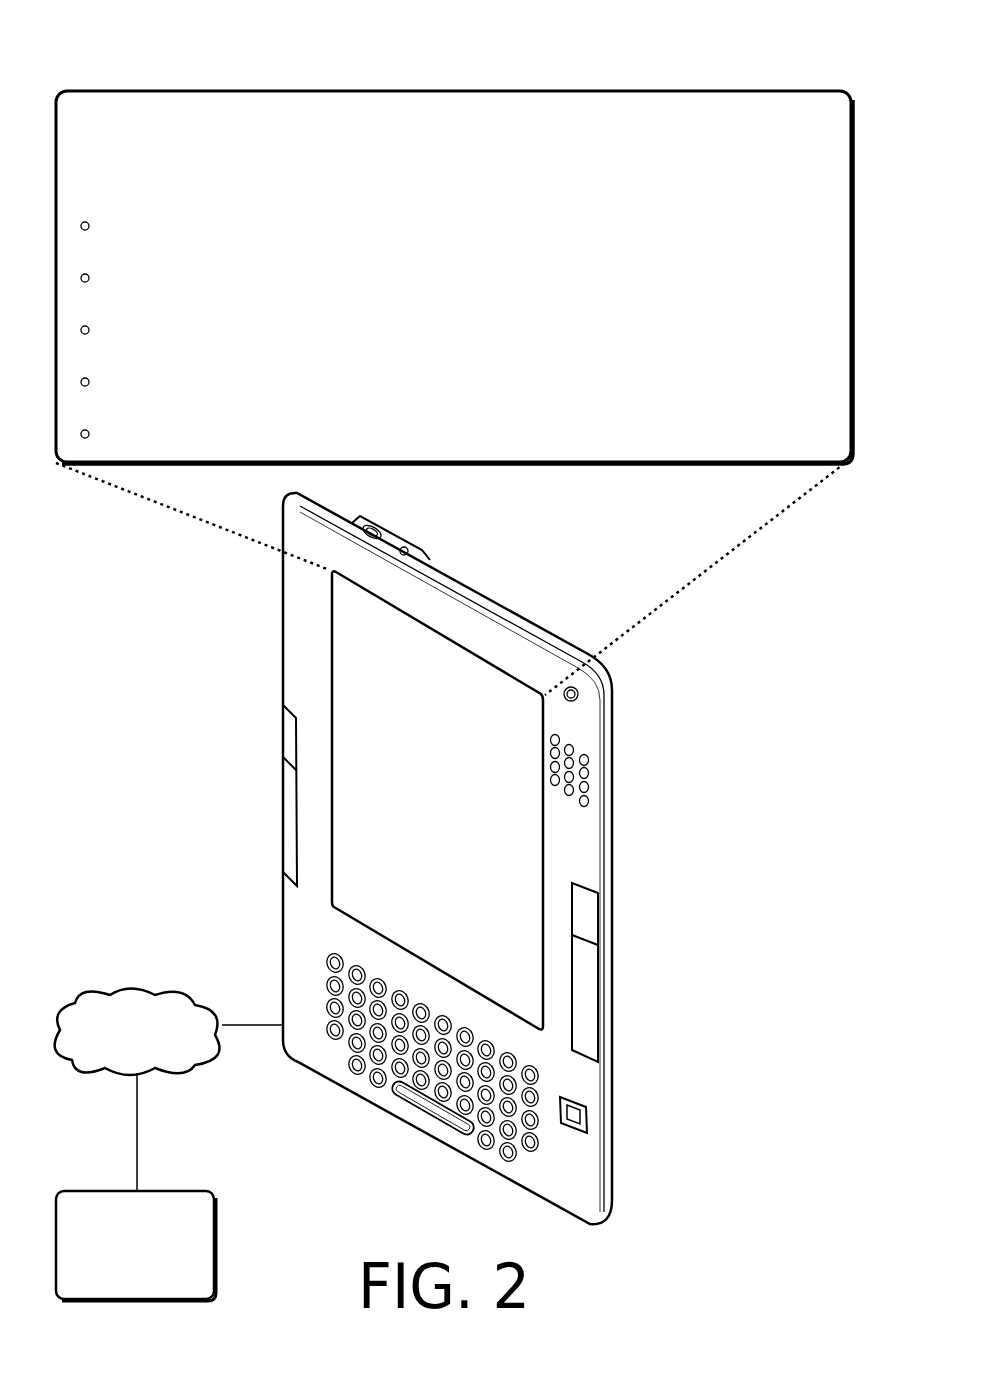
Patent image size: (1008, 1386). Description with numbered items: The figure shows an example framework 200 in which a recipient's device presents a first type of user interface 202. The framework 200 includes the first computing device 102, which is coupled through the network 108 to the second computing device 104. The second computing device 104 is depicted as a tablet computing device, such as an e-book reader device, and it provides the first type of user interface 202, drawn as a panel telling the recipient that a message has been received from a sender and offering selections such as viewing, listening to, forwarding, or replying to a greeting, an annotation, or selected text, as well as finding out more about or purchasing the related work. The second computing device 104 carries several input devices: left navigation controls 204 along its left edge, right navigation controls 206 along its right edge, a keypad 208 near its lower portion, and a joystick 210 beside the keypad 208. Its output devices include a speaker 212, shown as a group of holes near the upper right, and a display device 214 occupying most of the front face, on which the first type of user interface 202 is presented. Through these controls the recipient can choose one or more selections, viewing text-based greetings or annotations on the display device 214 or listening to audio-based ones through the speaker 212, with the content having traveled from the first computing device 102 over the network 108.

The framework 200 is at (152, 48).
The first type of user interface 202 is at (458, 91).
The second computing device 104 is at (486, 858).
The display device 214 is at (447, 776).
The left navigation controls 204 is at (253, 875).
The speaker 212 is at (620, 815).
The right navigation controls 206 is at (622, 1065).
The joystick 210 is at (622, 1135).
The keypad 208 is at (503, 1203).
The network 108 is at (155, 1053).
The first computing device 102 is at (153, 1288).